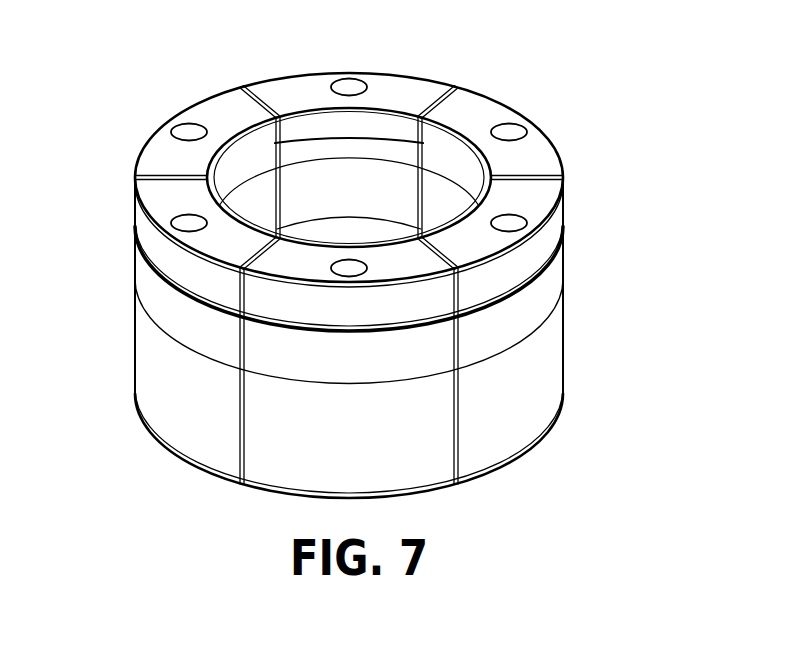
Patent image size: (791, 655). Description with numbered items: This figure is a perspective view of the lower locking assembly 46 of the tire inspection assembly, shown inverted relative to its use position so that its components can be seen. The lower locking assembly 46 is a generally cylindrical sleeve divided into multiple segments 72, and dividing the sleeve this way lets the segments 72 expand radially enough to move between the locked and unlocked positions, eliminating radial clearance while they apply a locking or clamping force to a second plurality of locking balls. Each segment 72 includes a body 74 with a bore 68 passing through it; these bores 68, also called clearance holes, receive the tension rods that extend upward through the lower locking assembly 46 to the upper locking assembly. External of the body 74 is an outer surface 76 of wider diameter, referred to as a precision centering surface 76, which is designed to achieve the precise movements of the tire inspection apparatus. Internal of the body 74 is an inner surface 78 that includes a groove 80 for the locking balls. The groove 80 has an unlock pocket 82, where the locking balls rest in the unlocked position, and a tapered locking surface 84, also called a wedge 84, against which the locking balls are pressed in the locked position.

The lower locking assembly 46 is at (355, 254).
The bore 68 is at (508, 132).
The segment 72 is at (363, 254).
The body 74 is at (542, 193).
The outer surface 76 is at (513, 323).
The inner surface 78 is at (262, 143).
The groove 80 is at (418, 138).
The unlock pocket 82 is at (296, 152).
The tapered locking surface 84 is at (363, 193).